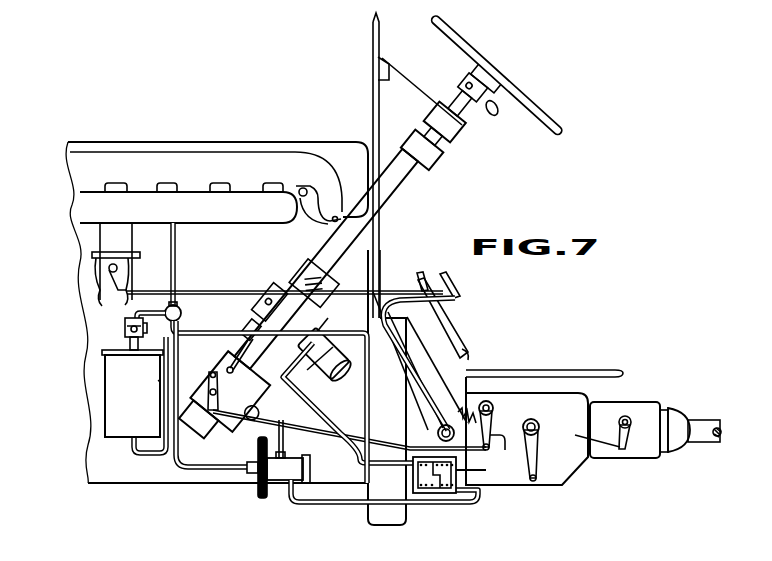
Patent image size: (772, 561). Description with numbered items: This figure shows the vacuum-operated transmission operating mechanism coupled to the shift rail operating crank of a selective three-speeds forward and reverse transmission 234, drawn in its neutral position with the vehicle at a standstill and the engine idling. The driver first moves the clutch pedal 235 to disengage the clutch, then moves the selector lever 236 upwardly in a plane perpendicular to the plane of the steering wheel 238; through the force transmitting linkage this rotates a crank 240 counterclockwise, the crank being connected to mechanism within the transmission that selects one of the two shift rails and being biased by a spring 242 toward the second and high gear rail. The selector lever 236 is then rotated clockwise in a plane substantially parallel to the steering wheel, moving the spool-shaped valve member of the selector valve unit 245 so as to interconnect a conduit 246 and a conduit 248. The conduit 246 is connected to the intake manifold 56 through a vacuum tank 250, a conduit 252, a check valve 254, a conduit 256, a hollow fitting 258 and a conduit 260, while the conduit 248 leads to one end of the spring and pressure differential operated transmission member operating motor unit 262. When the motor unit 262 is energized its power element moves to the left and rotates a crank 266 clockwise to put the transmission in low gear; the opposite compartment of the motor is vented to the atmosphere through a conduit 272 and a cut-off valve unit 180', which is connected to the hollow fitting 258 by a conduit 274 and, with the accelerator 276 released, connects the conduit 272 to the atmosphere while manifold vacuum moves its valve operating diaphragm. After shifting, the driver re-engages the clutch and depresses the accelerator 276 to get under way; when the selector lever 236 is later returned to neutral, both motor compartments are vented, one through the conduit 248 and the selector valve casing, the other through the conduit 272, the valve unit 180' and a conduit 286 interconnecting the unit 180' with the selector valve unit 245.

The intake manifold 56 is at (80, 211).
The cut-off valve unit 180' is at (278, 479).
The selective three-speeds forward and reverse transmission 234 is at (545, 402).
The clutch pedal 235 is at (446, 282).
The selector lever 236 is at (486, 110).
The steering wheel 238 is at (549, 118).
The crank 240 is at (514, 450).
The spring 242 is at (470, 413).
The selector valve unit 245 is at (337, 357).
The conduit 246 is at (204, 330).
The conduit 248 is at (350, 448).
The vacuum tank 250 is at (115, 417).
The conduit 252 is at (122, 343).
The check valve 254 is at (123, 330).
The conduit 256 is at (145, 310).
The hollow fitting 258 is at (179, 308).
The conduit 260 is at (178, 257).
The transmission member operating motor unit 262 is at (426, 496).
The crank 266 is at (539, 458).
The conduit 272 is at (357, 507).
The conduit 274 is at (200, 468).
The accelerator 276 is at (449, 323).
The conduit 286 is at (313, 387).